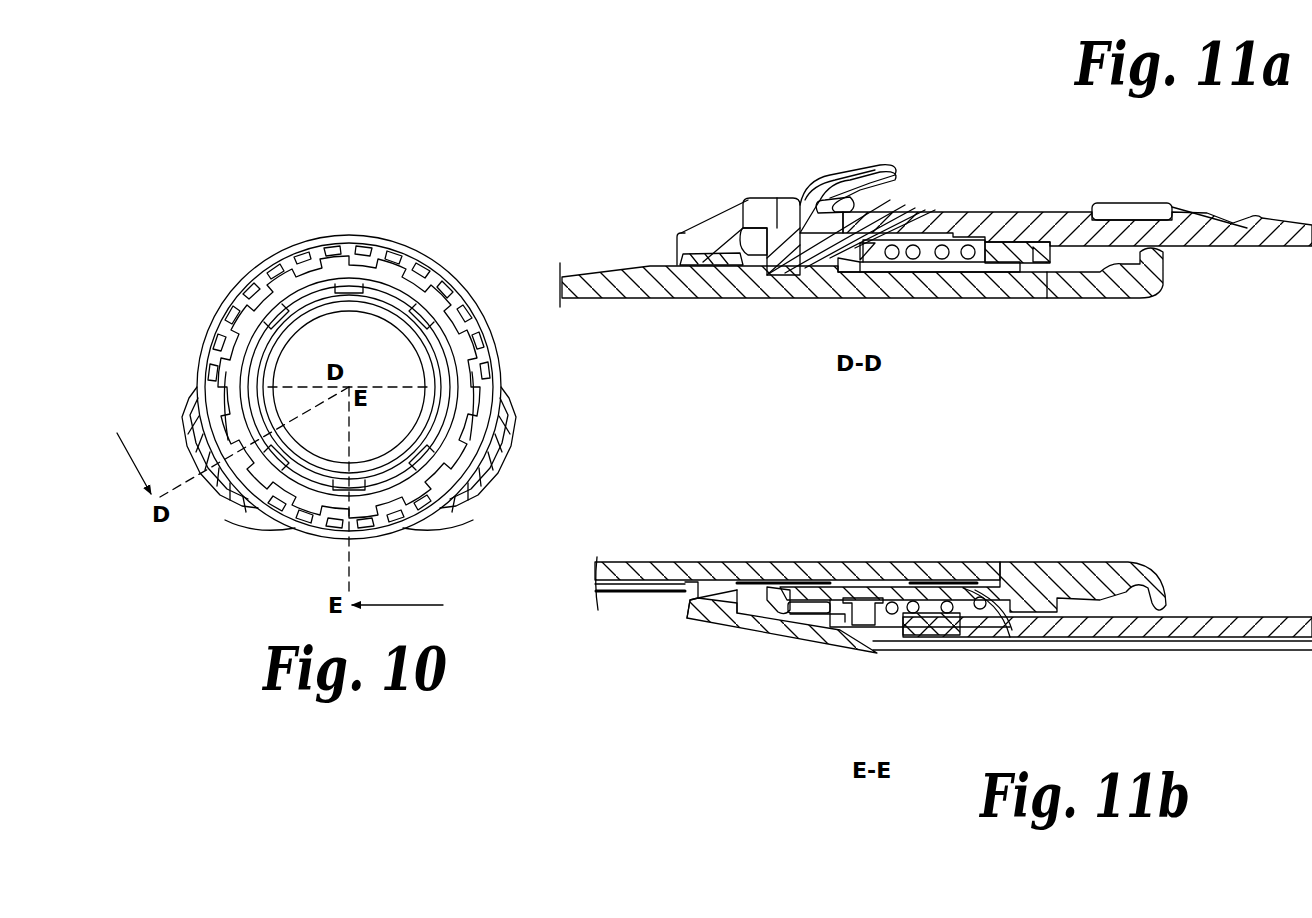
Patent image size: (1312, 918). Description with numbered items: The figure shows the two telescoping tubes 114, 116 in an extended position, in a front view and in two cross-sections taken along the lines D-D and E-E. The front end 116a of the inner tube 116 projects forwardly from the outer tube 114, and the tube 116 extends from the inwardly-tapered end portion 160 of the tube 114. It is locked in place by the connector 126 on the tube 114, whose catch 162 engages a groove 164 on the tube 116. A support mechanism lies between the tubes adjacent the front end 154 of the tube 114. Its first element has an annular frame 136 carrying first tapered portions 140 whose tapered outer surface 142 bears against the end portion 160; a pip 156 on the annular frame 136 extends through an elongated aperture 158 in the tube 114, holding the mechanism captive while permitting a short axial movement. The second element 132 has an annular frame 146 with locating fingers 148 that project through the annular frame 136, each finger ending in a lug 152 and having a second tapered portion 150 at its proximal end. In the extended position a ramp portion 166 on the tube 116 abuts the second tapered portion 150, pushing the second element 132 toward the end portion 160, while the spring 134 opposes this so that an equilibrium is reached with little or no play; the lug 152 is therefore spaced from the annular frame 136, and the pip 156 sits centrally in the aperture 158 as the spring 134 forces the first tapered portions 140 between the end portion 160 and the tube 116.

In FIG. 10, the tube 114 is at (445, 305).
In FIG. 11A, the tube 114 is at (1268, 240).
In FIG. 11B, the tube 114 is at (1236, 625).
In FIG. 10, the tube 116 is at (325, 287).
In FIG. 11A, the tube 116 is at (650, 278).
In FIG. 11B, the tube 116 is at (612, 575).
In FIG. 10, the front end 116a is at (380, 365).
In FIG. 10, the connector 126 is at (205, 415).
In FIG. 11A, the connector 126 is at (830, 195).
In FIG. 11A, the second element 132 is at (1012, 238).
In FIG. 11B, the second element 132 is at (962, 620).
In FIG. 11A, the spring 134 is at (968, 260).
In FIG. 11B, the spring 134 is at (920, 605).
In FIG. 11B, the annular frame 136 is at (846, 600).
In FIG. 11A, the first tapered portions 140 is at (765, 226).
In FIG. 11A, the tapered outer surface 142 is at (702, 232).
In FIG. 11A, the annular frame 146 is at (1040, 274).
In FIG. 11B, the locating fingers 148 is at (815, 603).
In FIG. 11B, the second tapered portions 150 is at (1005, 612).
In FIG. 11B, the lug 152 is at (781, 593).
In FIG. 10, the front end 154 is at (264, 298).
In FIG. 11A, the front end 154 is at (790, 198).
In FIG. 11B, the front end 154 is at (760, 642).
In FIG. 11B, the pip 156 is at (866, 618).
In FIG. 11B, the aperture 158 is at (810, 614).
In FIG. 11A, the end portion 160 is at (680, 244).
In FIG. 11B, the end portion 160 is at (692, 605).
In FIG. 11A, the catch 162 is at (855, 232).
In FIG. 11A, the groove 164 is at (776, 277).
In FIG. 11B, the ramp portion 166 is at (1030, 565).